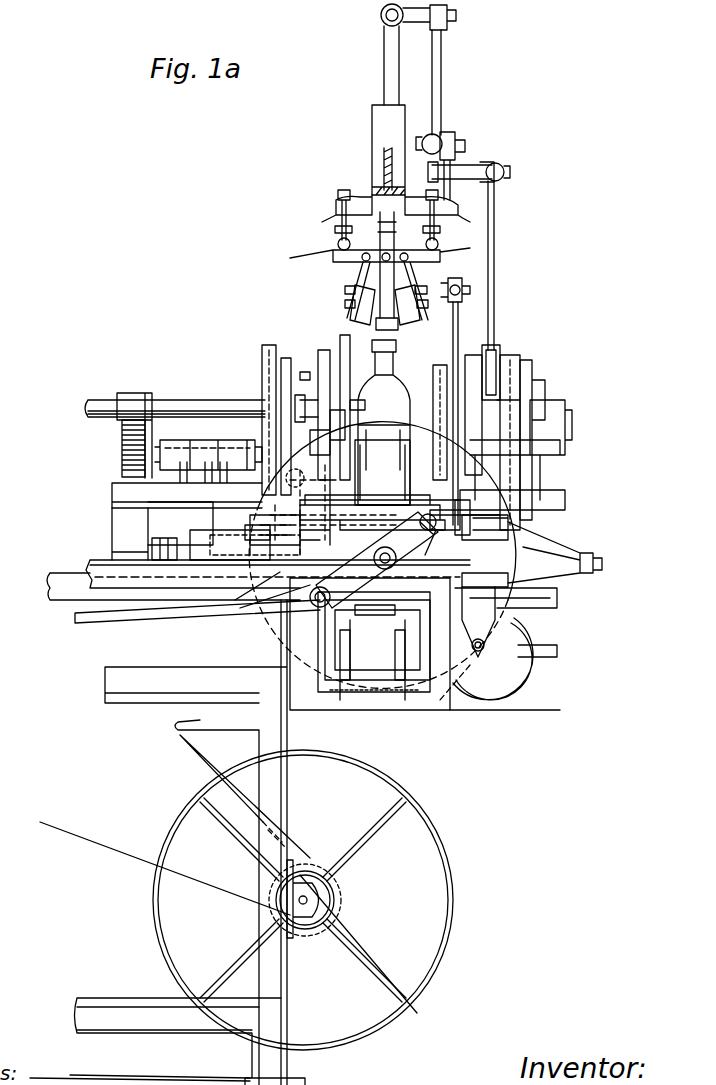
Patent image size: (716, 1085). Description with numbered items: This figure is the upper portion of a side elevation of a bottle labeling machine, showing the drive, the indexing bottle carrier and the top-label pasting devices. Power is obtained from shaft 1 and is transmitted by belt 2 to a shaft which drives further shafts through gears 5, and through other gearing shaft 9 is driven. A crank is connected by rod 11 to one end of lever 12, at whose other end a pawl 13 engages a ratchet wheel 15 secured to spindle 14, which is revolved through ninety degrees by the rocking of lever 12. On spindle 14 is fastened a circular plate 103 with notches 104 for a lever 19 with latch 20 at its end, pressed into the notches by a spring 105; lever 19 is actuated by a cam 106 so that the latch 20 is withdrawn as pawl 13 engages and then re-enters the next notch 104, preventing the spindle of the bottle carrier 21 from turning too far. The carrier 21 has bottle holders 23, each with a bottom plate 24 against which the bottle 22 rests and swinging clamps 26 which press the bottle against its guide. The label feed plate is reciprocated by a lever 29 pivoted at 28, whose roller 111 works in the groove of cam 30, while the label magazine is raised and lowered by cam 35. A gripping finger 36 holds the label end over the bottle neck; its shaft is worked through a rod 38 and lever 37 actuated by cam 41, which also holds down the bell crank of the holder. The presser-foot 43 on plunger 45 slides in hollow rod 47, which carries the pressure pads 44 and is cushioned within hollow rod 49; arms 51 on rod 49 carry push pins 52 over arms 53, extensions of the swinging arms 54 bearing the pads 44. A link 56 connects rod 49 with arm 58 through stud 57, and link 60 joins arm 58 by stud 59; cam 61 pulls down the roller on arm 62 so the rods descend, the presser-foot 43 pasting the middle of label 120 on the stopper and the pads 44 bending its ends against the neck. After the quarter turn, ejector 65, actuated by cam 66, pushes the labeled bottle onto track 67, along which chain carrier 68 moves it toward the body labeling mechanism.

The shaft 1 is at (322, 899).
The belt 2 is at (114, 855).
The gears 5 is at (337, 427).
The shaft 9 is at (98, 400).
The rod 11 is at (103, 625).
The lever 12 is at (330, 598).
The pawl 13 is at (420, 525).
The spindle 14 is at (412, 575).
The ratchet wheel 15 is at (345, 570).
The lever 19 is at (285, 485).
The latch 20 is at (268, 612).
The rotary bottle carrier 21 is at (465, 515).
The bottle 22 is at (575, 548).
The bottle holder 23 is at (316, 530).
The plate 24 is at (368, 628).
The movable clamps 26 is at (384, 551).
The pivot 28 is at (122, 460).
The lever 29 is at (347, 397).
The cam 30 is at (323, 404).
The cam 35 is at (495, 350).
The gripping finger 36 is at (384, 422).
The lever 37 is at (458, 340).
The rod 38 is at (460, 284).
The cam 41 is at (440, 365).
The presser-foot 43 is at (398, 322).
The pressure pads 44 is at (352, 305).
The plunger 45 is at (358, 276).
The hollow rod 47 is at (372, 210).
The hollow rod 49 is at (384, 45).
The arms 51 is at (338, 216).
The push pins 52 is at (337, 244).
The arms 53 is at (522, 238).
The swinging arms 54 is at (380, 275).
The link 56 is at (442, 80).
The stud 57 is at (428, 136).
The arm 58 is at (455, 138).
The stud 59 is at (487, 168).
The link 60 is at (493, 285).
The cam 61 is at (530, 365).
The arm 62 is at (512, 355).
The ejector 65 is at (250, 535).
The cam 66 is at (268, 345).
The track 67 is at (560, 600).
The supplemental carrier 68 is at (318, 712).
The circular plate 103 is at (362, 615).
The notches 104 is at (436, 556).
The spring 105 is at (205, 508).
The cam 106 is at (286, 358).
The roller 111 is at (187, 465).
The label 120 is at (152, 545).